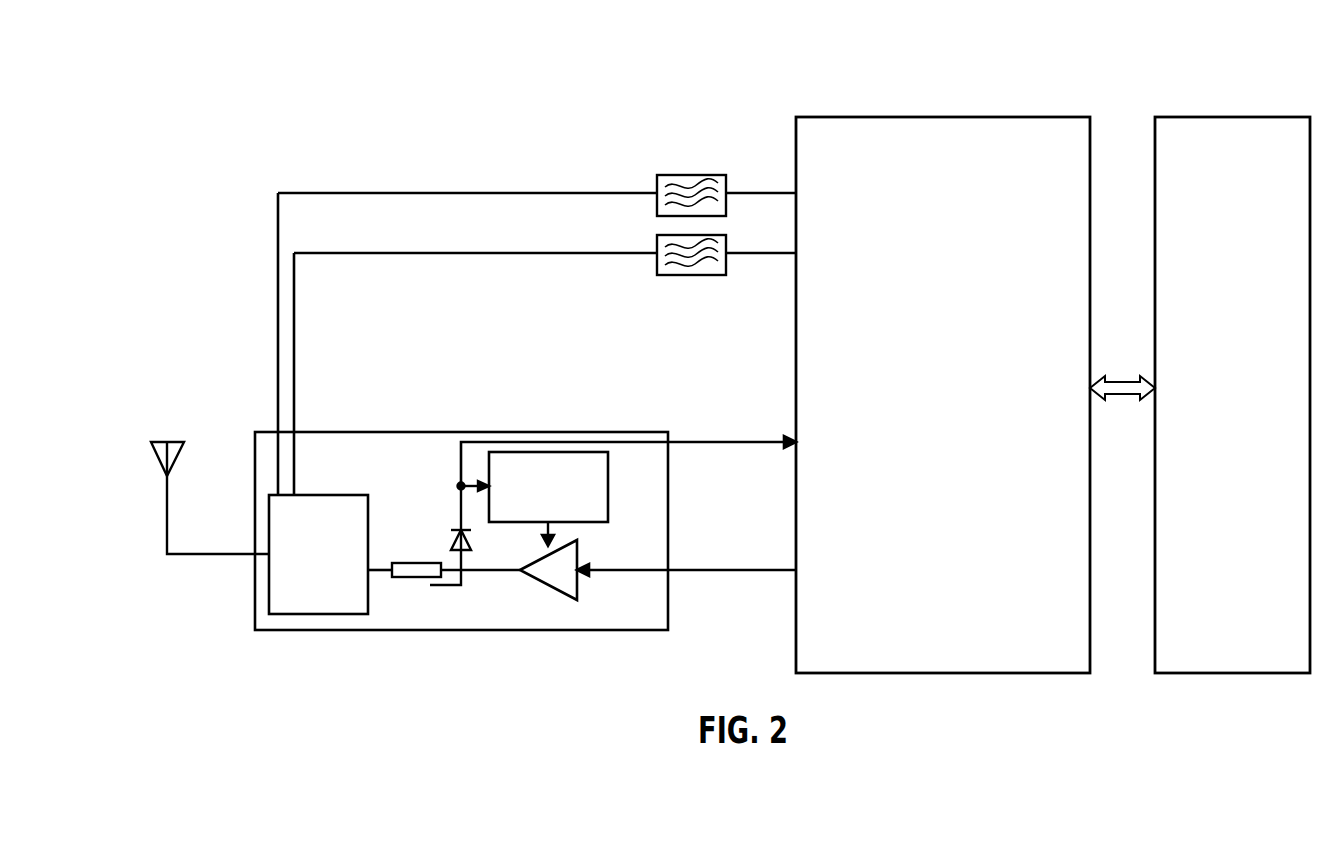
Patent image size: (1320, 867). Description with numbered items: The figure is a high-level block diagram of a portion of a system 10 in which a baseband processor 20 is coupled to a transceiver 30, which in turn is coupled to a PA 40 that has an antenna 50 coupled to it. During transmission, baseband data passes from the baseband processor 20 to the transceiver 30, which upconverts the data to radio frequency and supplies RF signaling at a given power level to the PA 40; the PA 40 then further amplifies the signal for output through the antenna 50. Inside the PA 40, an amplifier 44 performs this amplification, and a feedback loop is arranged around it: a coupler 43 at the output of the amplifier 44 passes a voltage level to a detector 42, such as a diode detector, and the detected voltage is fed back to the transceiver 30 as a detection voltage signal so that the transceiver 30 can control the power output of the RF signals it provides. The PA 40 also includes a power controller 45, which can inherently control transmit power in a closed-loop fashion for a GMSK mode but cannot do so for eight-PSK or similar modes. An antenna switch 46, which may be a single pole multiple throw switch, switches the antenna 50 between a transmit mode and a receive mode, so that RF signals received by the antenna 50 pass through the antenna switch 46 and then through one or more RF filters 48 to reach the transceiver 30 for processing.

The system 10 is at (230, 126).
The baseband processor 20 is at (1225, 675).
The transceiver 30 is at (940, 675).
The PA 40 is at (460, 630).
The detector 42 is at (457, 530).
The coupler 43 is at (415, 578).
The amplifier 44 is at (548, 592).
The power controller 45 is at (548, 452).
The antenna switch 46 is at (269, 600).
The RF filters 48 is at (690, 175).
The antenna 50 is at (167, 442).